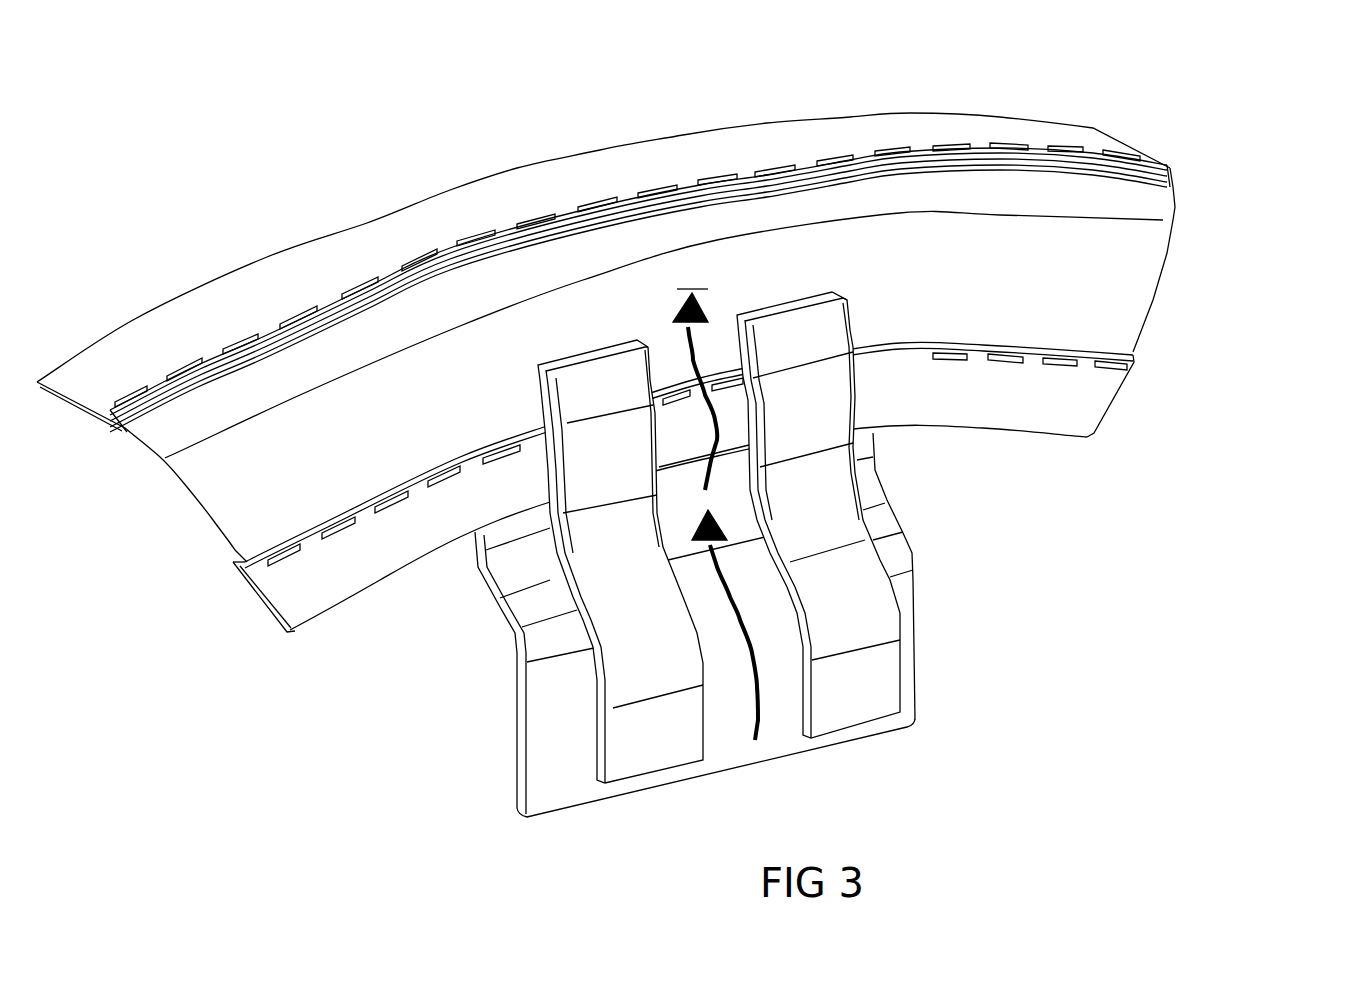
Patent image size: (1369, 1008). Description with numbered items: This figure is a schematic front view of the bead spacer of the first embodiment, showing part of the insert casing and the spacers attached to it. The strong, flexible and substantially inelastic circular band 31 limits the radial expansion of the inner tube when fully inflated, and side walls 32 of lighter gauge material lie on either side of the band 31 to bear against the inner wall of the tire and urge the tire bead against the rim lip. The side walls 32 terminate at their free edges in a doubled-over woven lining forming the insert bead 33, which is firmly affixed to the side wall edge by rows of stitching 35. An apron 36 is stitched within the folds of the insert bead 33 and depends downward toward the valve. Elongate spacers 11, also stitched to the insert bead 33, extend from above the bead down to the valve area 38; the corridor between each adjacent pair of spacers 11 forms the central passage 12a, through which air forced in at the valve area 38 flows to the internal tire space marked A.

The elongate spacers 11 is at (638, 667).
The central passage 12a is at (742, 592).
The circular band 31 is at (963, 122).
The side walls 32 is at (1095, 297).
The insert bead 33 is at (1073, 398).
The rows of stitching 35 is at (950, 357).
The apron 36 is at (828, 743).
The valve area 38 is at (737, 758).